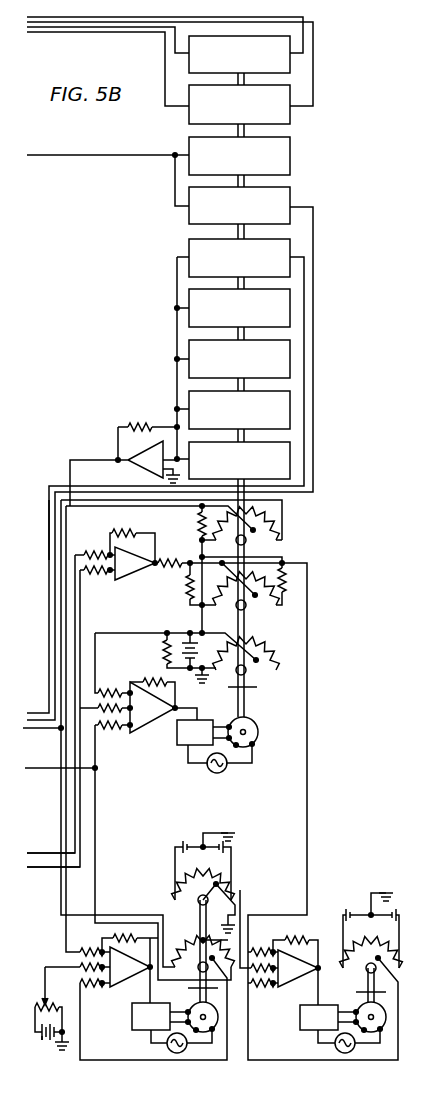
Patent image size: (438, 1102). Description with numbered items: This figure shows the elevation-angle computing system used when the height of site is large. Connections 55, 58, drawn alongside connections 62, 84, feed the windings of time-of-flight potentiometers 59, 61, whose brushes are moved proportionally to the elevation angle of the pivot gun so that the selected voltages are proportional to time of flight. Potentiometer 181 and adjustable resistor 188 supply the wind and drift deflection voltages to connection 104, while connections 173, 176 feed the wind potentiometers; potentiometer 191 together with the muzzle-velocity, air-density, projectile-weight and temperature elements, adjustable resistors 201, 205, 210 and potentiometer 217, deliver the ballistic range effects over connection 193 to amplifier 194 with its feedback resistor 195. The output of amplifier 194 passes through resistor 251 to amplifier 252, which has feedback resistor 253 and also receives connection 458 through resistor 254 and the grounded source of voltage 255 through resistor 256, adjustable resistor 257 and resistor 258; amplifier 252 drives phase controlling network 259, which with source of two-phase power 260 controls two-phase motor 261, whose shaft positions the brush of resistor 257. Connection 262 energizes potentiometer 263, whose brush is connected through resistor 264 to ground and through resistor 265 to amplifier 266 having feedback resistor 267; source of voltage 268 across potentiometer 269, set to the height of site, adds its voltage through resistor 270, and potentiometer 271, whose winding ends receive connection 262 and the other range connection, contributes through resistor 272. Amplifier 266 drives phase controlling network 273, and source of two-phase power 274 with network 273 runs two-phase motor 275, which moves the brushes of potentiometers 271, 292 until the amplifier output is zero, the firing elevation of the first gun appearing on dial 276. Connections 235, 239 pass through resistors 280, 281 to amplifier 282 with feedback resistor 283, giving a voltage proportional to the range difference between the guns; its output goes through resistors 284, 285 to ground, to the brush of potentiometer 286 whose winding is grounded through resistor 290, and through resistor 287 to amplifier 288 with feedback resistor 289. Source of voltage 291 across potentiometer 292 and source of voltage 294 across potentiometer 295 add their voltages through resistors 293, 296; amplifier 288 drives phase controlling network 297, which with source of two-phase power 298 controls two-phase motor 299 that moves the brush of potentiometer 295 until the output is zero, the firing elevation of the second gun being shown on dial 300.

The connection 55 is at (40, 18).
The input line 62 is at (68, 23).
The input line 84 is at (96, 28).
The connection 58 is at (126, 33).
The potentiometer 59 is at (245, 37).
The potentiometer 61 is at (252, 86).
The adjustable resistor 188 is at (283, 146).
The potentiometer 181 is at (283, 200).
The potentiometer 191 is at (189, 247).
The adjustable resistor 201 is at (283, 305).
The adjustable resistor 205 is at (283, 357).
The adjustable resistor 210 is at (283, 409).
The potentiometer 217 is at (283, 463).
The connection 104 is at (52, 157).
The connection 173 is at (61, 487).
The connection 176 is at (49, 527).
The connection 193 is at (177, 328).
The feedback resistor 195 is at (143, 423).
The amplifier 194 is at (149, 468).
The connection 262 is at (98, 499).
The resistor 281 is at (104, 555).
The resistor 280 is at (100, 576).
The amplifier 282 is at (120, 577).
The feedback resistor 283 is at (143, 532).
The resistor 284 is at (184, 544).
The resistor 285 is at (186, 580).
The resistor 264 is at (200, 526).
The potentiometer 263 is at (275, 524).
The resistor 290 is at (286, 588).
The potentiometer 286 is at (267, 605).
The source of voltage 255 is at (185, 643).
The resistor 256 is at (162, 657).
The adjustable resistor 257 is at (268, 662).
The resistor 258 is at (119, 684).
The resistor 251 is at (124, 728).
The resistor 254 is at (113, 728).
The line 458 is at (34, 770).
The amplifier 252 is at (140, 718).
The feedback resistor 253 is at (156, 680).
The phase controlling network 259 is at (200, 720).
The two-phase motor 261 is at (256, 728).
The source of two-phase power 260 is at (218, 771).
The connection 239 is at (51, 852).
The connection 235 is at (30, 868).
The dial 276 is at (190, 989).
The potentiometer 292 is at (230, 877).
The source of voltage 291 is at (183, 843).
The potentiometer 271 is at (196, 939).
The resistor 265 is at (98, 952).
The resistor 270 is at (79, 966).
The resistor 272 is at (83, 985).
The feedback resistor 267 is at (122, 938).
The amplifier 266 is at (113, 978).
The potentiometer 269 is at (59, 1007).
The source of voltage 268 is at (42, 1048).
The phase controlling network 273 is at (138, 1030).
The two-phase motor 275 is at (215, 1060).
The source of two-phase power 274 is at (177, 1053).
The dial 300 is at (360, 993).
The potentiometer 295 is at (399, 954).
The source of voltage 294 is at (398, 910).
The resistor 287 is at (273, 946).
The resistor 293 is at (251, 992).
The resistor 296 is at (261, 988).
The feedback resistor 289 is at (308, 939).
The amplifier 288 is at (284, 980).
The phase controlling network 297 is at (300, 1030).
The two-phase motor 299 is at (386, 1018).
The oscillator 298 is at (344, 1054).